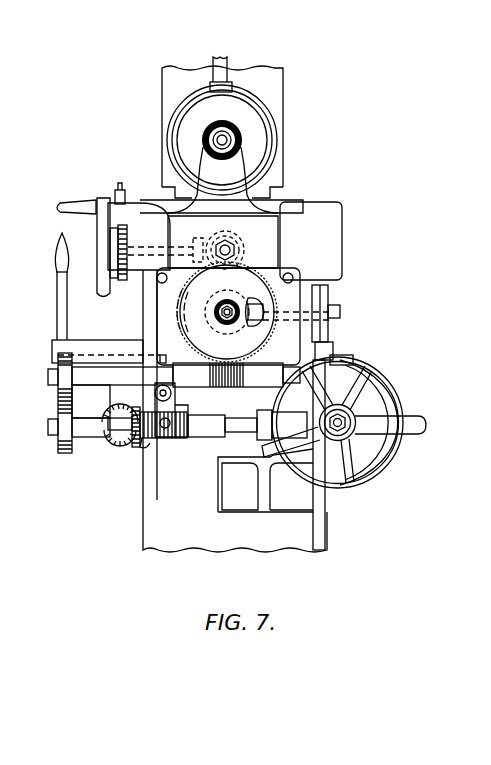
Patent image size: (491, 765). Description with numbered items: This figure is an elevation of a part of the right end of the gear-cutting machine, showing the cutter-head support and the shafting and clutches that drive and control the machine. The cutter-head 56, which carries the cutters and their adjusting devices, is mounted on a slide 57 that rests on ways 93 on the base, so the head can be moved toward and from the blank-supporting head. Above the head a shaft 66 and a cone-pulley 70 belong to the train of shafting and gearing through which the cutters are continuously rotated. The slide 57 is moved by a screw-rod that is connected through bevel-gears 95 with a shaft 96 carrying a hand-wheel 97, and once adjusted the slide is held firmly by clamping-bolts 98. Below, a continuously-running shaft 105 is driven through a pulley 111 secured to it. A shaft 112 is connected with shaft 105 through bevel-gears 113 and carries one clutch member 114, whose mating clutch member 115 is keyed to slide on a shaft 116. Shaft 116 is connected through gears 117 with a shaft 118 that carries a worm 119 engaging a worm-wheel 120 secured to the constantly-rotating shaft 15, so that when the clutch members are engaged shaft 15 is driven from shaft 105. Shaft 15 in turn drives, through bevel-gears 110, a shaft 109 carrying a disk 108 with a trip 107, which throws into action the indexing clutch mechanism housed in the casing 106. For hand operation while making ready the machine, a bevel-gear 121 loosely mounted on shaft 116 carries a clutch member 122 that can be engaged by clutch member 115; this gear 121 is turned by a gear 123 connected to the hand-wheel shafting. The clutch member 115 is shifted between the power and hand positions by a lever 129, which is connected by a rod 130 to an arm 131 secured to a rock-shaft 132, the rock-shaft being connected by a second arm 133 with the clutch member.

The constantly-rotating shaft 15 is at (234, 328).
The cutter-head 56 is at (283, 160).
The slide 57 is at (333, 222).
The shaft 66 is at (232, 62).
The cone-pulley 70 is at (250, 125).
The ways 93 is at (307, 270).
The bevel-gears 95 is at (221, 238).
The shaft 96 is at (155, 245).
The hand-wheel 97 is at (105, 229).
The clamping-bolts 98 is at (118, 190).
The continuously-running shaft 105 is at (345, 427).
The casing 106 is at (403, 378).
The trip 107 is at (336, 347).
The disk 108 is at (336, 322).
The shaft 109 is at (328, 294).
The bevel-gears 110 is at (228, 300).
The pulley 111 is at (348, 490).
The shaft 112 is at (243, 432).
The bevel-gears 113 is at (326, 393).
The clutch member 114 is at (205, 437).
The clutch member 115 is at (160, 445).
The shaft 116 is at (102, 445).
The gears 117 is at (58, 422).
The shaft 118 is at (122, 378).
The worm 119 is at (258, 350).
The worm-wheel 120 is at (210, 318).
The bevel-gear 121 is at (124, 447).
The clutch member 122 is at (150, 447).
The gear 123 is at (117, 411).
The lever 129 is at (57, 292).
The rod 130 is at (97, 342).
The arm 131 is at (163, 355).
The rock-shaft 132 is at (178, 393).
The arm 133 is at (190, 414).